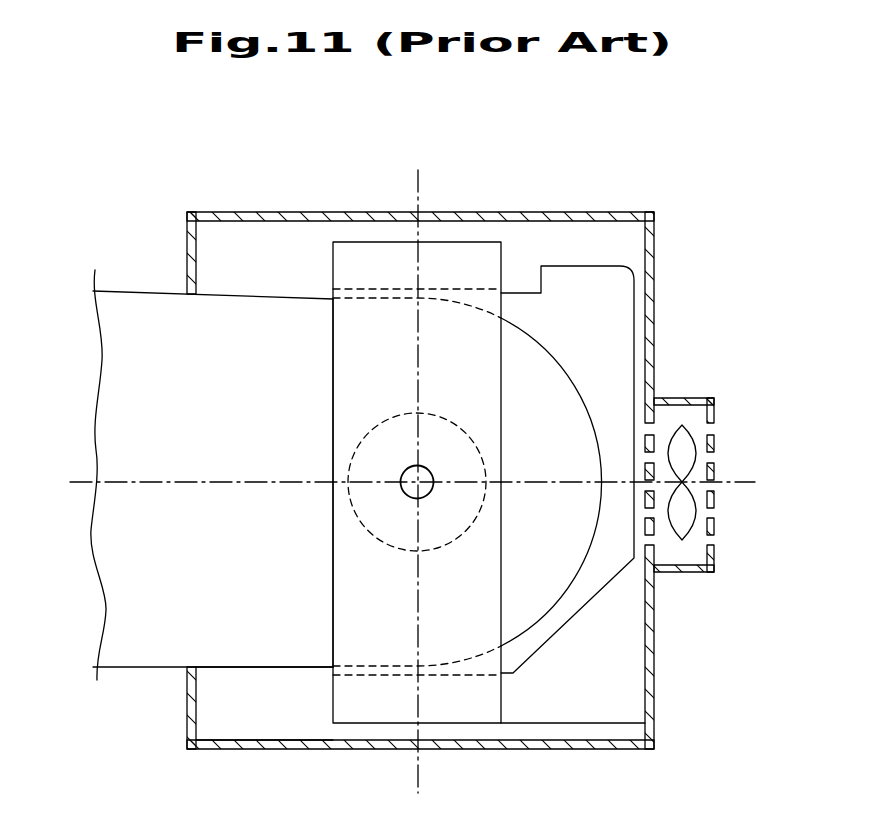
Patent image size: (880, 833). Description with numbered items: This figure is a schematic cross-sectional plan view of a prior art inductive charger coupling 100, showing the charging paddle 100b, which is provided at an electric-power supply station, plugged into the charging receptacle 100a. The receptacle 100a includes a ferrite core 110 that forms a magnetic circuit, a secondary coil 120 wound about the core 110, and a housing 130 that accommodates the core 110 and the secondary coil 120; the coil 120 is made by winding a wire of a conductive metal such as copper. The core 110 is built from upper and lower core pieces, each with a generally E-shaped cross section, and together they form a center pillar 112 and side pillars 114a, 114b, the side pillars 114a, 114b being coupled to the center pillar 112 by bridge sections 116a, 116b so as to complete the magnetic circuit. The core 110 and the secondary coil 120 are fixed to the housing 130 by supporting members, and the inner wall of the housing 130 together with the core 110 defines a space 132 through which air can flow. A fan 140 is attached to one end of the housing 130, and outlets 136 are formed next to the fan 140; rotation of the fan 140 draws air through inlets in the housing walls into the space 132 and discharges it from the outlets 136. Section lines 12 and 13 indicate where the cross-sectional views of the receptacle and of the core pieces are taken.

The section line 12- 12 is at (414, 485).
The section line 13- 13 is at (420, 485).
The inductive charger coupling 100 is at (377, 479).
The charging receptacle 100a is at (217, 207).
The charging paddle 100b is at (133, 281).
The ferrite core 110 is at (324, 699).
The center pillar 112 is at (362, 442).
The side pillar 114a is at (380, 264).
The side pillar 114b is at (368, 710).
The bridge section 116a is at (333, 333).
The bridge section 116b is at (333, 587).
The secondary coil 120 is at (553, 323).
The housing 130 is at (177, 722).
The space 132 is at (472, 233).
The outlets 136 is at (711, 538).
The fan 140 is at (689, 540).